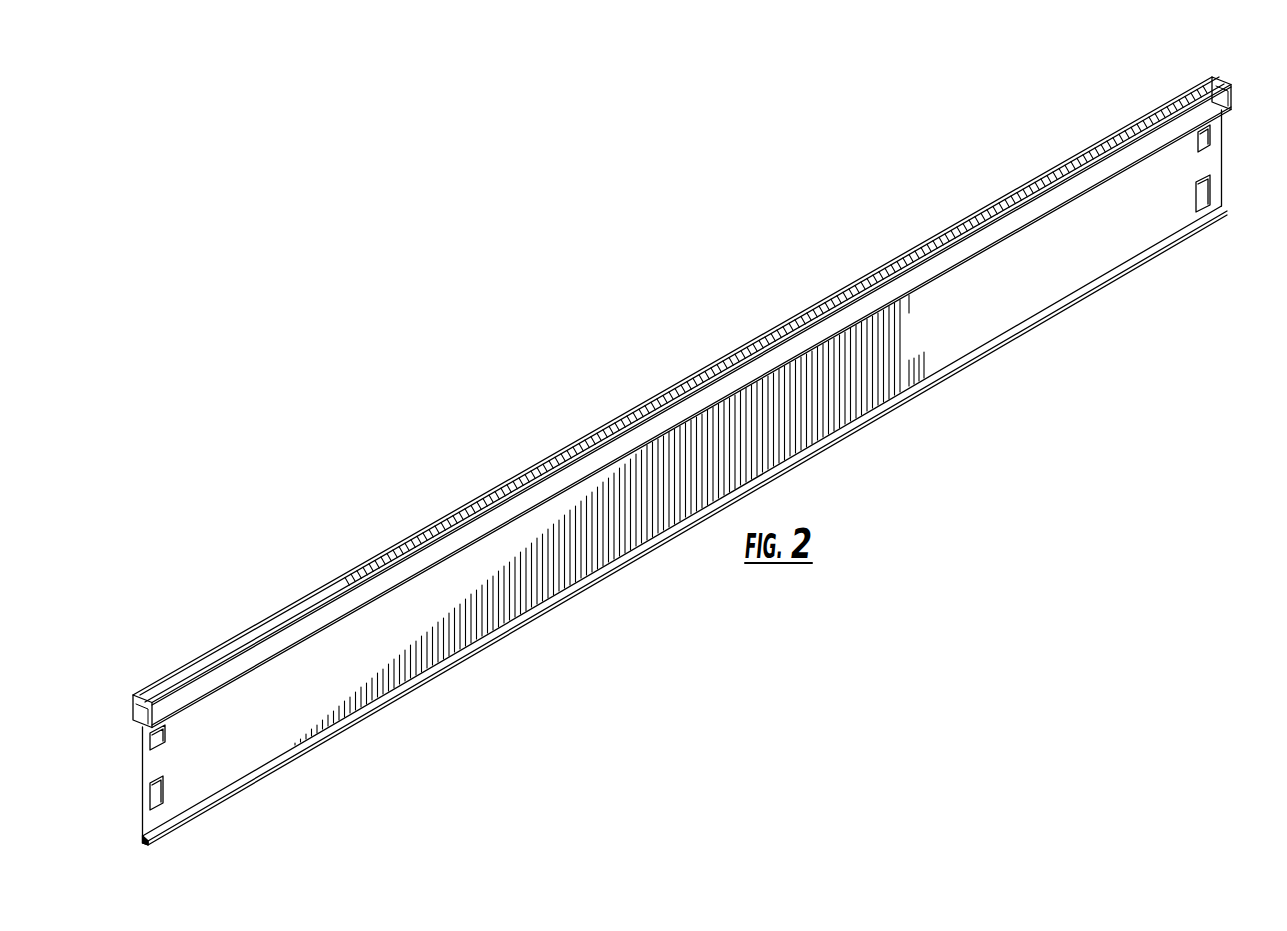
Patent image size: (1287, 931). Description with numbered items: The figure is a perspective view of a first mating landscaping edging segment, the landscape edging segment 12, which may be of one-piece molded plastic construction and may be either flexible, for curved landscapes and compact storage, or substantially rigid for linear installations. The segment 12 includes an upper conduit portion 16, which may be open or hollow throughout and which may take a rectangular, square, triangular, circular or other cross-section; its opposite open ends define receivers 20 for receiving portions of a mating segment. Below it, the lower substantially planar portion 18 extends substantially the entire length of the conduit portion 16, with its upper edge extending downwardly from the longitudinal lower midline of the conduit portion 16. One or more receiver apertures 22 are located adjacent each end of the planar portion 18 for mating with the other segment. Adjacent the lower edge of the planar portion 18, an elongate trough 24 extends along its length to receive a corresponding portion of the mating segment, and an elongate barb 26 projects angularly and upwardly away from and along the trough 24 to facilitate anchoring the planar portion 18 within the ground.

The landscape edging segment 12 is at (448, 421).
The conduit portion 16 is at (841, 290).
The planar portion 18 is at (1030, 298).
The receivers 20 is at (136, 706).
The receiver apertures 22 is at (150, 794).
The elongate trough 24 is at (143, 845).
The elongate barb 26 is at (375, 707).